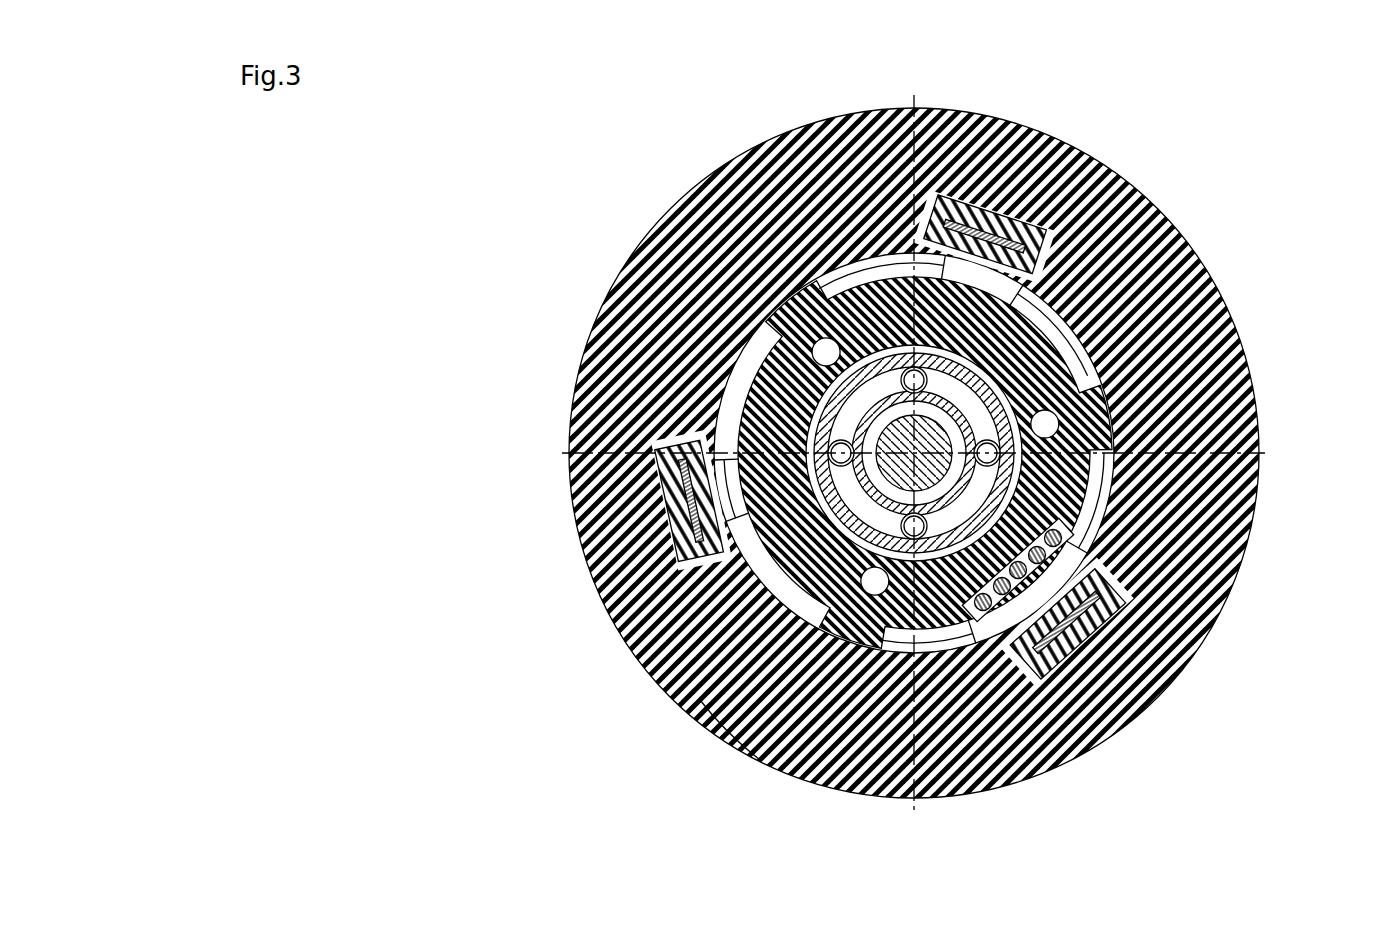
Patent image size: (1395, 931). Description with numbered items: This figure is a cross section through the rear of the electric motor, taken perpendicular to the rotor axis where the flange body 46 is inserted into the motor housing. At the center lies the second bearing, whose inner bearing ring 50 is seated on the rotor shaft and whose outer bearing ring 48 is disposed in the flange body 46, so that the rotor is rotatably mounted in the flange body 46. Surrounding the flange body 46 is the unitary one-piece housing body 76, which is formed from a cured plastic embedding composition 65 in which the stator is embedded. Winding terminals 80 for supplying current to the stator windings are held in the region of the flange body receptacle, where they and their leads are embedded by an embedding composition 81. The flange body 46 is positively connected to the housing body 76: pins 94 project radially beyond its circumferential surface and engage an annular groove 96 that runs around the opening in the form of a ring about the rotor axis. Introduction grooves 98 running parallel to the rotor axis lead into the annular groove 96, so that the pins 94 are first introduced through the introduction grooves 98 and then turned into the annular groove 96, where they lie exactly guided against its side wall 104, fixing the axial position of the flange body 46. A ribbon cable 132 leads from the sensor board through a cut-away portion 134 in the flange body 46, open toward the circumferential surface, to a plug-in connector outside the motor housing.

The flange body 46 is at (1027, 377).
The outer bearing ring 48 is at (848, 497).
The inner bearing ring 50 is at (882, 487).
The embedding composition 65 is at (1218, 398).
The housing body 76 is at (1172, 338).
The winding terminals 80 is at (966, 222).
The embedding composition 81 is at (690, 520).
The pins 94 is at (740, 740).
The annular groove 96 is at (833, 284).
The introduction grooves 98 is at (724, 492).
The side wall 104 is at (928, 648).
The ribbon cable 132 is at (1000, 603).
The cut-away portion 134 is at (975, 632).